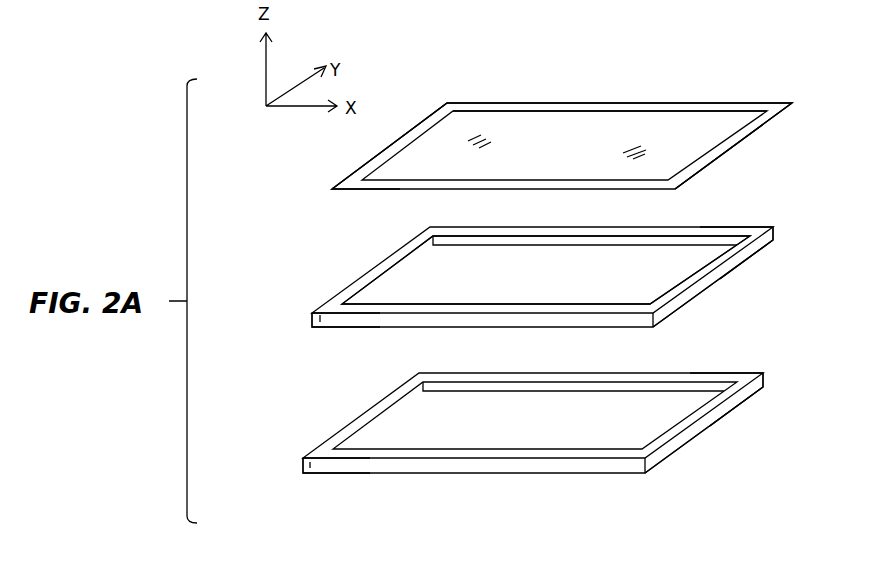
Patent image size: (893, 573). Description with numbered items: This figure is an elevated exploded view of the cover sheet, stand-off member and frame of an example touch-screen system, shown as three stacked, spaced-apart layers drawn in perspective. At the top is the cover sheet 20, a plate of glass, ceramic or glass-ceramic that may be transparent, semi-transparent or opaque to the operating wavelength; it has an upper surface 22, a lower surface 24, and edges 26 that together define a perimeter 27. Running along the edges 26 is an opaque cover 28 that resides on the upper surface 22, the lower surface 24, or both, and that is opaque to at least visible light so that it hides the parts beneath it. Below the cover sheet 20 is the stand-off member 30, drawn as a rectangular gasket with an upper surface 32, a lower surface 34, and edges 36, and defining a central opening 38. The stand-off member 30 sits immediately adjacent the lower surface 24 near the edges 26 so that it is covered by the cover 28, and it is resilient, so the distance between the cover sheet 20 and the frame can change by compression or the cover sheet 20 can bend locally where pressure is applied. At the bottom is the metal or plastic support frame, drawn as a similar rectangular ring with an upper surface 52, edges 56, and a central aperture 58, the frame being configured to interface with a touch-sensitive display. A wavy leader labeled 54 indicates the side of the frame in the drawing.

The cover sheet 20 is at (707, 93).
The upper surface 22 is at (472, 122).
The lower surface 24 is at (706, 135).
The edges 26 is at (354, 189).
The perimeter 27 is at (363, 153).
The cover 28 is at (542, 105).
The stand-off member 30 is at (343, 247).
The upper surface 32 is at (753, 230).
The lower surface 34 is at (716, 282).
The edges 36 is at (334, 320).
The central opening 38 is at (401, 288).
The upper surface 52 is at (742, 382).
The right side of bottom frame 54 is at (703, 432).
The edges 56 is at (325, 465).
The central aperture 58 is at (408, 428).